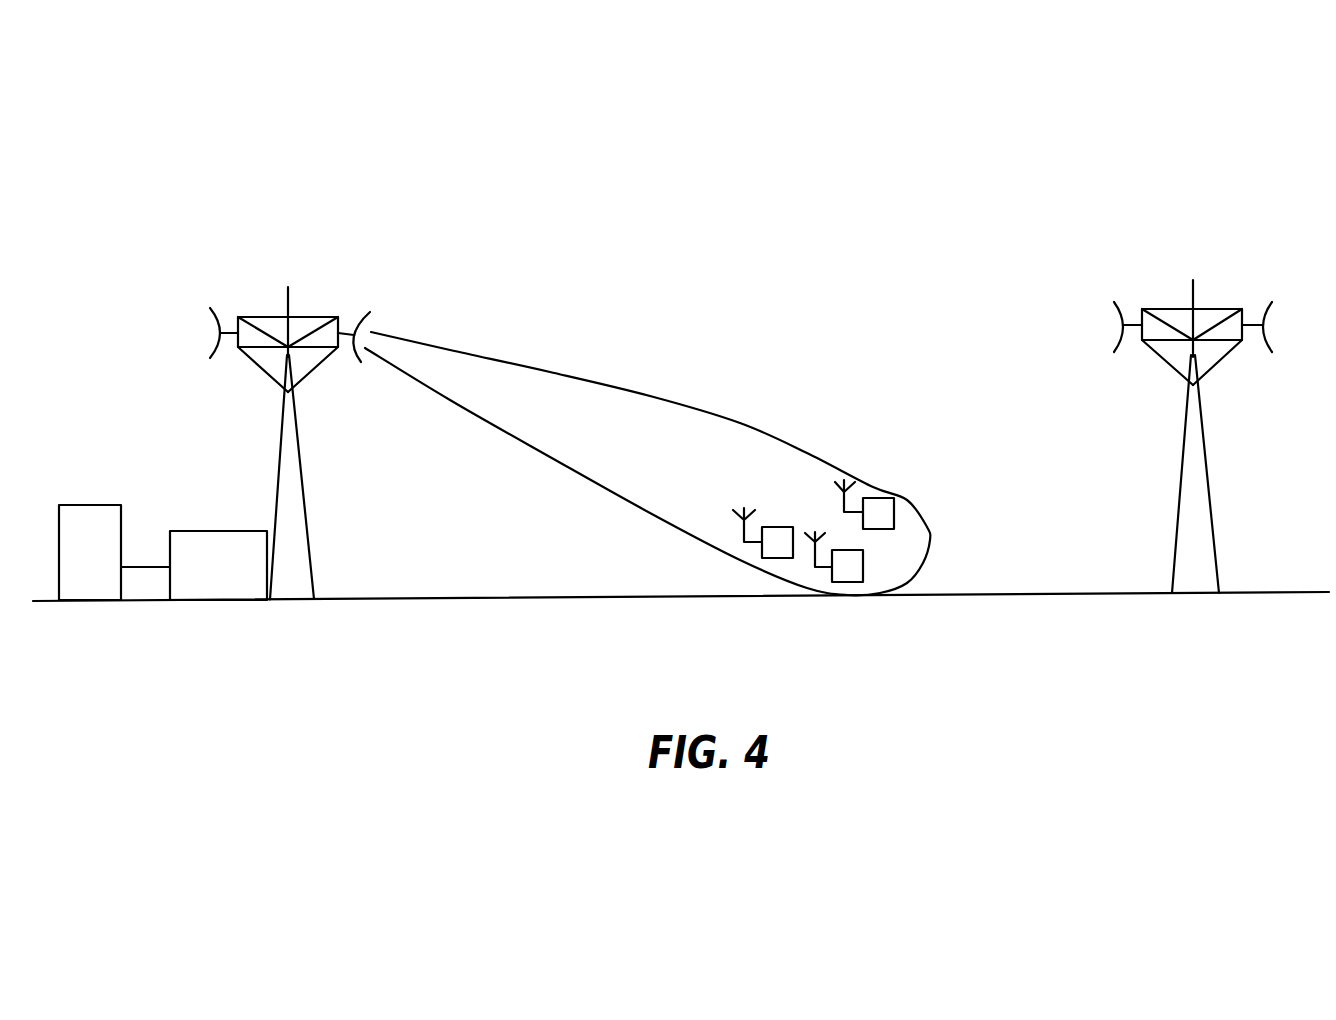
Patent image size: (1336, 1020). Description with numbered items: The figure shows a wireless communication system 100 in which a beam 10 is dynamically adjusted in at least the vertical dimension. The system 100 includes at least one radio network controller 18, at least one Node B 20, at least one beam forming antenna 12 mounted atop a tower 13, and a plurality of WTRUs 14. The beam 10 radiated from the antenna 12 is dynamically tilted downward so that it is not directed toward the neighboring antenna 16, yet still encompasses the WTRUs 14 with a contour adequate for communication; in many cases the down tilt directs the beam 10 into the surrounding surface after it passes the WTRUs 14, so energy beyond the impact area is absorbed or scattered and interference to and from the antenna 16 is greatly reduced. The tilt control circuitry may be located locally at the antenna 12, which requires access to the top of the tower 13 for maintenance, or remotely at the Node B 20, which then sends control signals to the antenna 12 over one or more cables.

The system 100 is at (766, 258).
The beam 10 is at (708, 410).
The beam forming antenna 12 is at (343, 333).
The tower 13 is at (278, 438).
The WTRUs 14 is at (843, 550).
The neighboring antenna 16 is at (1118, 317).
The radio network controller 18 is at (98, 595).
The Node B 20 is at (208, 597).